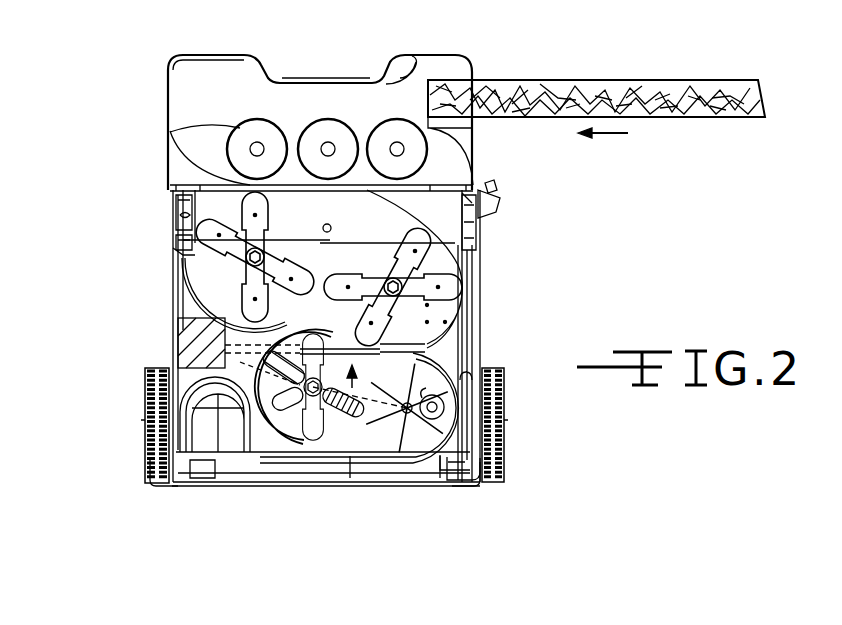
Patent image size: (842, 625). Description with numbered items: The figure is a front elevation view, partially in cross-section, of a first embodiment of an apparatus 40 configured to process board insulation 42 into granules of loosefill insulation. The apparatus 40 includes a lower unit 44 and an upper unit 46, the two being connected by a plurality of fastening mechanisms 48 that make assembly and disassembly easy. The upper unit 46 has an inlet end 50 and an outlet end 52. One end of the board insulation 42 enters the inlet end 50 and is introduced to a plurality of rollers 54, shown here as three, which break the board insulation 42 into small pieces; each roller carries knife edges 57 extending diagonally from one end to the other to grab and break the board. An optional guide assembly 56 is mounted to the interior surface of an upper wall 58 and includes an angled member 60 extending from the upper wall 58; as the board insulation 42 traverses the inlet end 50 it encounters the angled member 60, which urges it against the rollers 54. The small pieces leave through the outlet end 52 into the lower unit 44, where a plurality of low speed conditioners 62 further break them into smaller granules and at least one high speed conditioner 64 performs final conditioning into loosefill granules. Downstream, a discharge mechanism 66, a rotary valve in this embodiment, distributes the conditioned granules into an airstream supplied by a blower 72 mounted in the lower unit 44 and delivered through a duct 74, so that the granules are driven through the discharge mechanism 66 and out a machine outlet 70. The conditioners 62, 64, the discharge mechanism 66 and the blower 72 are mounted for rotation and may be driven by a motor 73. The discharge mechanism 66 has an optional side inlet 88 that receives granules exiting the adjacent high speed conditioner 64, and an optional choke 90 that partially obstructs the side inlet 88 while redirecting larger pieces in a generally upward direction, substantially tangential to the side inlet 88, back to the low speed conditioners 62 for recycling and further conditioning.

The apparatus 40 is at (79, 91).
The board insulation 42 is at (700, 117).
The lower unit 44 is at (170, 296).
The upper unit 46 is at (168, 98).
The fastening mechanisms 48 is at (172, 226).
The inlet end 50 is at (480, 80).
The outlet end 52 is at (477, 246).
The rollers 54 is at (170, 131).
The guide assembly 56 is at (341, 84).
The knife edges 57 is at (240, 128).
The upper wall 58 is at (222, 53).
The angled member 60 is at (427, 73).
The low speed conditioners 62 is at (190, 262).
The high speed conditioner 64 is at (325, 482).
The discharge mechanism 66 is at (432, 482).
The machine outlet 70 is at (460, 468).
The blower 72 is at (170, 338).
The motor 73 is at (268, 482).
The duct 74 is at (440, 367).
The side inlet 88 is at (386, 482).
The choke 90 is at (345, 482).